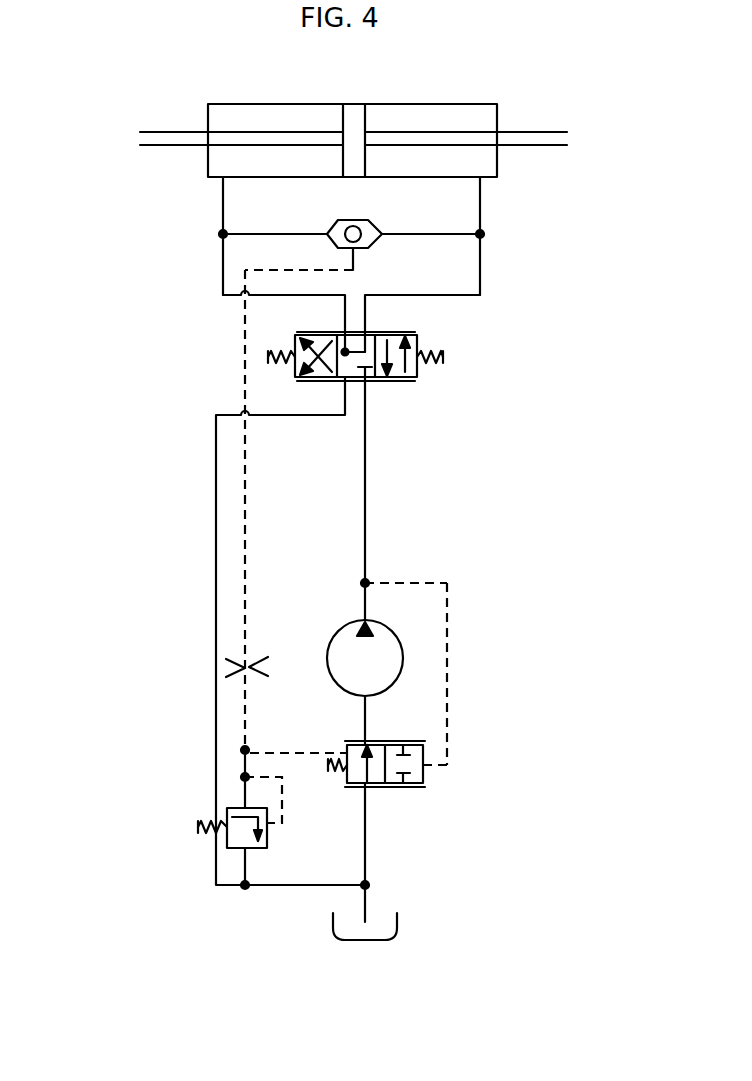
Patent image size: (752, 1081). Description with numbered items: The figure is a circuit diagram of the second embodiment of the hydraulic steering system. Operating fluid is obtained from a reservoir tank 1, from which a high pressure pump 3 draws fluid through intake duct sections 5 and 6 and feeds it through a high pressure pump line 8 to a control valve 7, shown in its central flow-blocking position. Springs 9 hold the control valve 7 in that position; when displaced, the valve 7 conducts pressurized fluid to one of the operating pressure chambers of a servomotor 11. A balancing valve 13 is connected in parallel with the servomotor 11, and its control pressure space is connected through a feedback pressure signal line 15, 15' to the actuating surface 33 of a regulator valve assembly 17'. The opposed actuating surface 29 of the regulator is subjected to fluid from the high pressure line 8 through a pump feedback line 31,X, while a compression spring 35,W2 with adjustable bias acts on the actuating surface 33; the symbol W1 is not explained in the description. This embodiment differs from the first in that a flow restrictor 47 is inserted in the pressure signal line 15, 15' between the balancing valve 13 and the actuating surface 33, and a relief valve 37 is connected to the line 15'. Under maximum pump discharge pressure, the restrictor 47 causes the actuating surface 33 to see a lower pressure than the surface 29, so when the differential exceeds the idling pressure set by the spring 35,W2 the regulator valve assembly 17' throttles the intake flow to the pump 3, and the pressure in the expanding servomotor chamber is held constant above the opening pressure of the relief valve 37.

The reservoir tank 1 is at (342, 928).
The high pressure pump 3 is at (382, 673).
The intake duct section 5 is at (363, 845).
The intake duct section 6 is at (362, 710).
The control valve 7 is at (413, 343).
The high pressure pump line 8 is at (367, 478).
The springs 9 is at (281, 363).
The servomotor 11 is at (483, 120).
The balancing valve 13 is at (367, 235).
The feedback pressure signal line 15 is at (251, 510).
The pressure signal line 15' is at (198, 766).
The regulator valve assembly 17' is at (485, 795).
The actuating surface 29 is at (423, 768).
The pump feedback line 31,X is at (448, 662).
The actuating surface 33 is at (347, 778).
The compression spring 35,W2 is at (298, 764).
The relief valve 37 is at (243, 825).
The flow restrictor 47 is at (257, 673).
The control line W1 is at (279, 735).